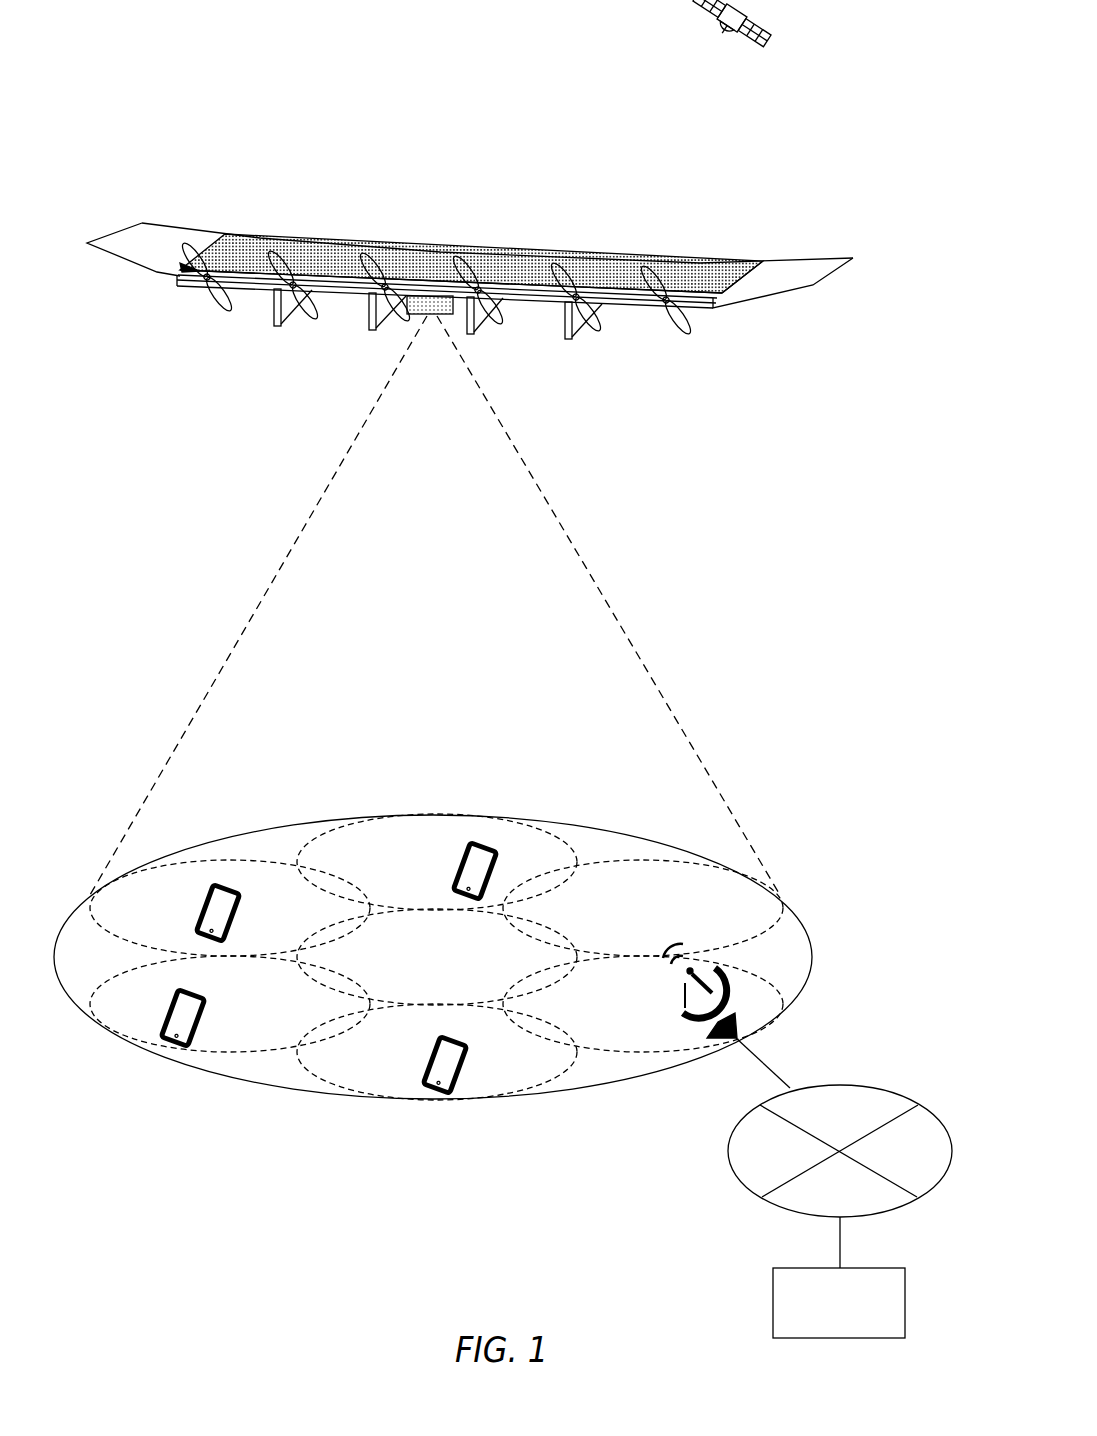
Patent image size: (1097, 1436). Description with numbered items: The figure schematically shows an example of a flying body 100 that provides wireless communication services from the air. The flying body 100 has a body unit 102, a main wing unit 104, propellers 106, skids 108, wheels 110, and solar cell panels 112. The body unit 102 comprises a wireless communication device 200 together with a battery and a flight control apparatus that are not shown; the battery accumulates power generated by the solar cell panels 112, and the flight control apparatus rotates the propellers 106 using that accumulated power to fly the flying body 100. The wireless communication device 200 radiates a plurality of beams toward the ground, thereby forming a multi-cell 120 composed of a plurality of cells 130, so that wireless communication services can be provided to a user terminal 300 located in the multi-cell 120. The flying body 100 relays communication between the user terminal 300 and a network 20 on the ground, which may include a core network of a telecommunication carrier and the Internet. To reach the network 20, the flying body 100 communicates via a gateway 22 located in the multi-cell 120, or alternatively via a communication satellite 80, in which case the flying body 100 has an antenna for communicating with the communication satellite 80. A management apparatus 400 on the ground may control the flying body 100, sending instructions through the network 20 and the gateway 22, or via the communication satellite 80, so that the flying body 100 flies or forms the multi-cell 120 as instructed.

The flying body 100 is at (116, 171).
The body unit 102 is at (396, 250).
The main wing unit 104 is at (155, 237).
The propellers 106 is at (215, 299).
The skids 108 is at (271, 322).
The wheels 110 is at (291, 322).
The solar cell panels 112 is at (258, 253).
The wireless communication device 200 is at (440, 270).
The multi-cell 120 is at (577, 814).
The cells 130 is at (431, 828).
The user terminal 300 is at (247, 896).
The gateway 22 is at (683, 1004).
The network 20 is at (889, 1090).
The management apparatus 400 is at (900, 1257).
The communication satellite 80 is at (762, 26).